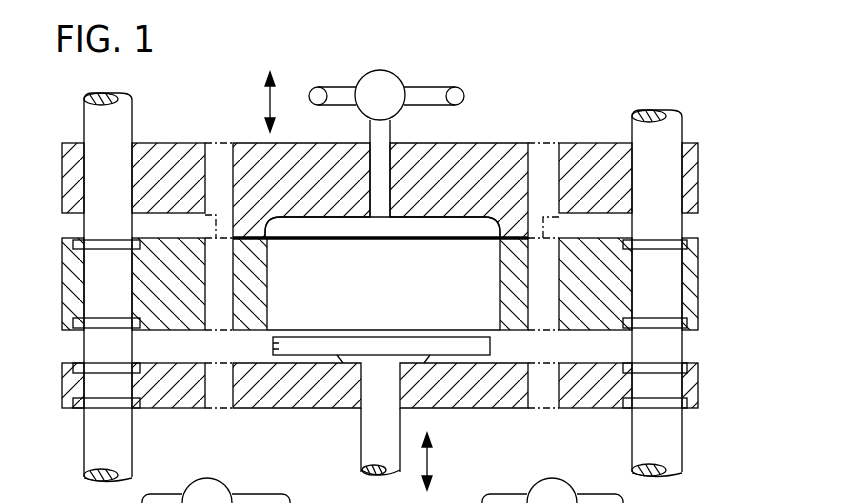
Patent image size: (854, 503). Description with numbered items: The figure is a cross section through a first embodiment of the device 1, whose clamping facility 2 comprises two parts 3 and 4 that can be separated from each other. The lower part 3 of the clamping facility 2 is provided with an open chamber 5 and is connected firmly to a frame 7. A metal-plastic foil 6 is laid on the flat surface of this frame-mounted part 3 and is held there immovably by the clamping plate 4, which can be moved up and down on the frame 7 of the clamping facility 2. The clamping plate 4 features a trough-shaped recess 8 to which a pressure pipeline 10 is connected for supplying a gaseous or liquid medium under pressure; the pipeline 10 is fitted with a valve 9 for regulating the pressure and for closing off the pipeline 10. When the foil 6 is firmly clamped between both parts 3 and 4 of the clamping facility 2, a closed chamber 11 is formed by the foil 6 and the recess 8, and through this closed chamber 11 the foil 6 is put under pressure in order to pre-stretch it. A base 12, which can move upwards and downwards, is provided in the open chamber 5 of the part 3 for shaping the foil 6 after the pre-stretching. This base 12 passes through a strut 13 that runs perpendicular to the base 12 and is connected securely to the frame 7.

The device 1 is at (507, 143).
The clamping facility 2 is at (72, 178).
The part of the clamping facility 3 is at (688, 283).
The clamping plate 4 is at (688, 183).
The open chamber 5 is at (463, 298).
The metal-plastic foil 6 is at (297, 243).
The frame 7 is at (95, 448).
The trough-shaped recess 8 is at (348, 225).
The valve 9 is at (363, 90).
The pressure pipeline 10 is at (437, 90).
The closed chamber 11 is at (427, 225).
The base 12 is at (273, 343).
The strut 13 is at (327, 398).